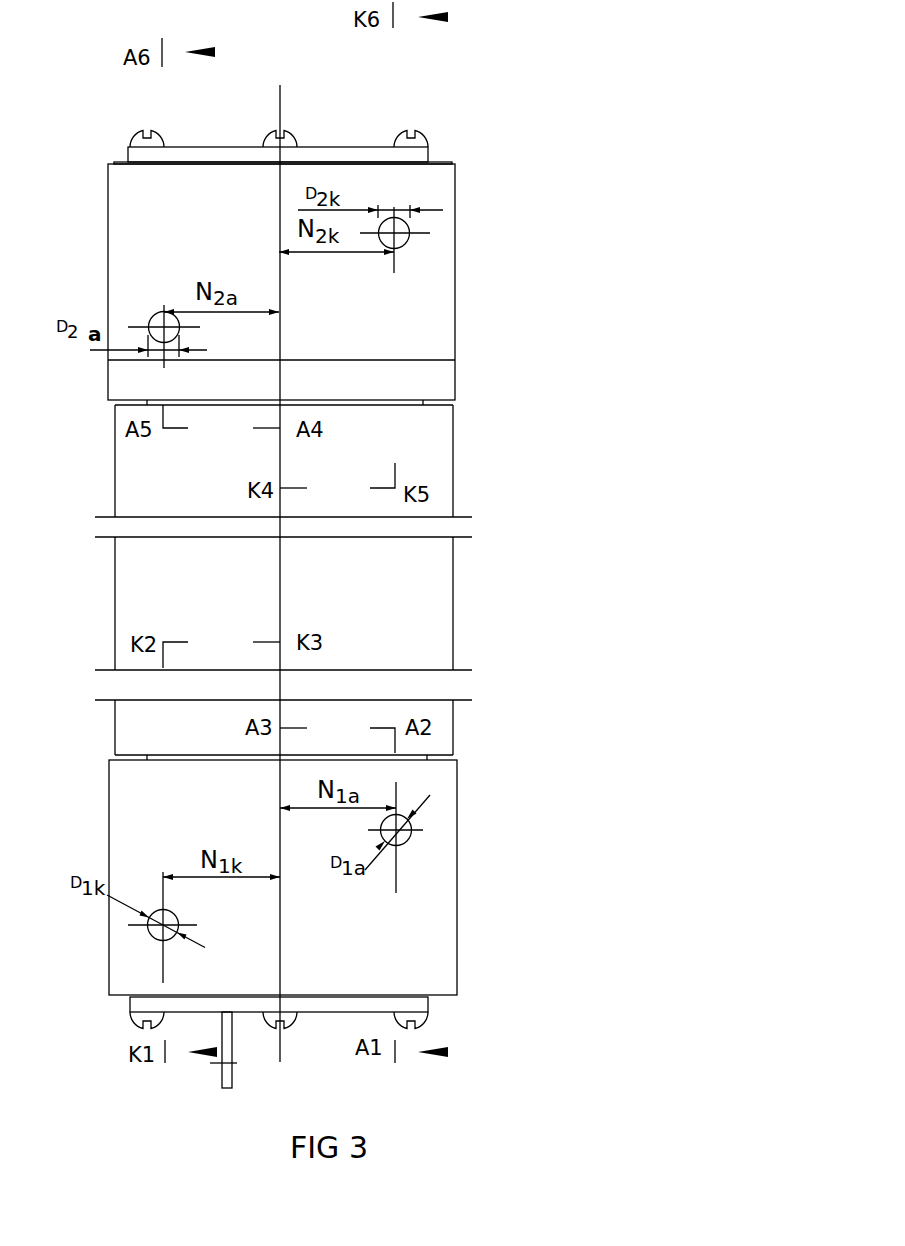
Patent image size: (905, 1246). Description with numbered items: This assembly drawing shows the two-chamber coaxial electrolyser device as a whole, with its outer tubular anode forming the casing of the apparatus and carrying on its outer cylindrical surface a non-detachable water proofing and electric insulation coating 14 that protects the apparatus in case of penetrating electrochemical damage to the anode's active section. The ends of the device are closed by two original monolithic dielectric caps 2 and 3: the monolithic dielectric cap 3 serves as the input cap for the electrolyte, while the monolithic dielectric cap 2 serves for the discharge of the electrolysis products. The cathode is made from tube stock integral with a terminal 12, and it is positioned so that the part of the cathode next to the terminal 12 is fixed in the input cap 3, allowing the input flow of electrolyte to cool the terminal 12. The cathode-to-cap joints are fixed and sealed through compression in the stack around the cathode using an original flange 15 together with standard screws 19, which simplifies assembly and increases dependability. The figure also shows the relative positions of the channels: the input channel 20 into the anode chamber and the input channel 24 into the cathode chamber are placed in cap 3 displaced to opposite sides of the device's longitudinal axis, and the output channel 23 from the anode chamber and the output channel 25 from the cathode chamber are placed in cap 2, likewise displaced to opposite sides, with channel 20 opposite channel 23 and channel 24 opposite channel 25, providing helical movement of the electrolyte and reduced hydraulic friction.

The monolithic dielectric cap 2 is at (450, 200).
The monolithic dielectric cap 3 is at (442, 770).
The terminal 12 is at (232, 1085).
The water proofing and electric insulation coating 14 is at (438, 423).
The flange 15 is at (418, 153).
The screws 19 is at (427, 132).
The input channel 20 is at (405, 827).
The output channel 23 is at (172, 333).
The input channel 24 is at (178, 916).
The output channel 25 is at (407, 242).